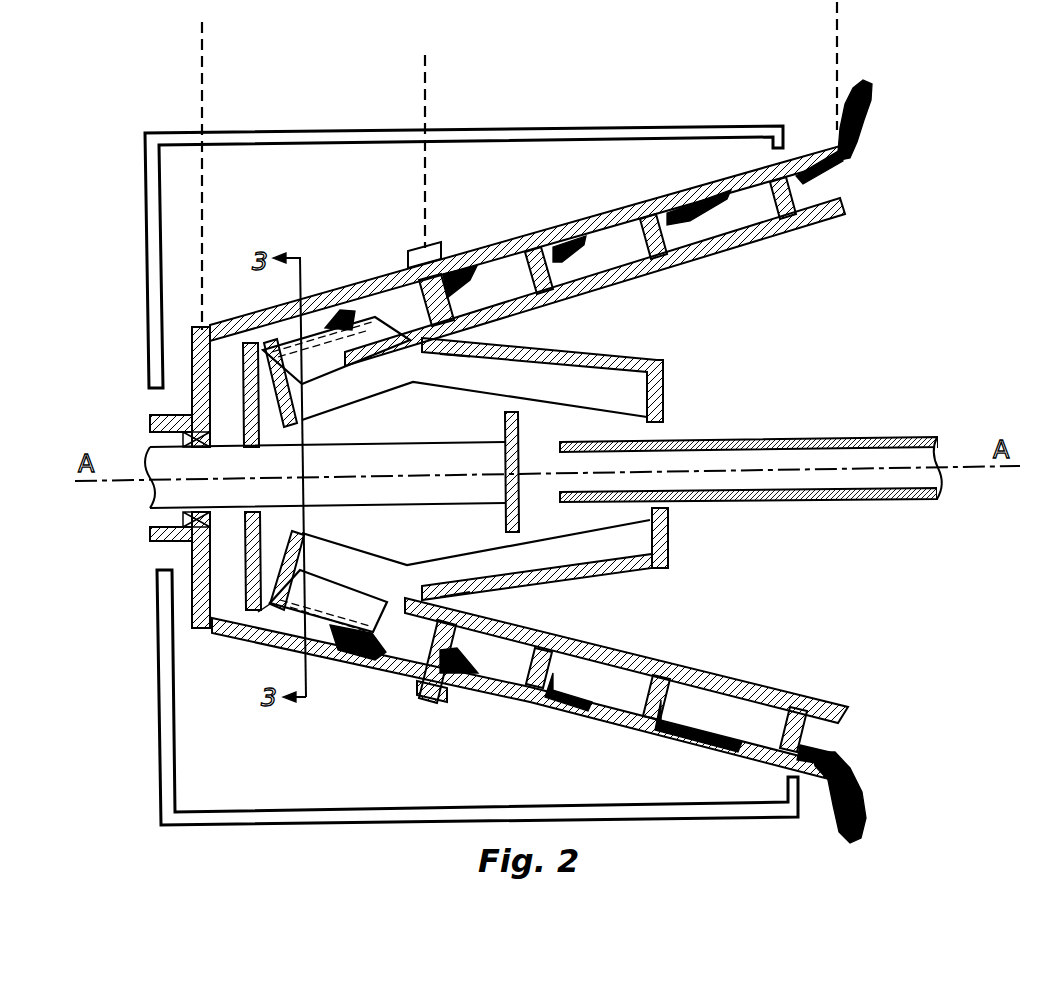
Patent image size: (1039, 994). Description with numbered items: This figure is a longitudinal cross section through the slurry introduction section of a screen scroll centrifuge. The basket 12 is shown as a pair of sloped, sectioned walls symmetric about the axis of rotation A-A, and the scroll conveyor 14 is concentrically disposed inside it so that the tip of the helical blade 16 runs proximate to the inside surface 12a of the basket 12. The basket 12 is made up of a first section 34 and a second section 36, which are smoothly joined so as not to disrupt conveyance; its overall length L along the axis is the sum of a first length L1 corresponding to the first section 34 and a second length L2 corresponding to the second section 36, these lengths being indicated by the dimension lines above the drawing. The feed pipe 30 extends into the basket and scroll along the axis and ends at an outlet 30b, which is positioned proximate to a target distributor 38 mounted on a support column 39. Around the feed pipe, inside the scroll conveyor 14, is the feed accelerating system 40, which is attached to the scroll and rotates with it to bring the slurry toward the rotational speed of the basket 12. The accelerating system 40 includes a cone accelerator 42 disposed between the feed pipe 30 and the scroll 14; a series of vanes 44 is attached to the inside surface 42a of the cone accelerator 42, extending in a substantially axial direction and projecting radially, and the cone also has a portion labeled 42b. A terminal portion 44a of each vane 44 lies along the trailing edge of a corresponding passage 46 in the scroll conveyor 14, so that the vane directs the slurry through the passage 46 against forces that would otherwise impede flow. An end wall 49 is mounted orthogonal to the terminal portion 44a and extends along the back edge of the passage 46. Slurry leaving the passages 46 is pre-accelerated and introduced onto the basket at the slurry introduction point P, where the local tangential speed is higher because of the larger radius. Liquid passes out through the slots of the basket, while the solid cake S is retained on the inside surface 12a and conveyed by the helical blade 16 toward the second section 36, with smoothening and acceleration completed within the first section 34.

The basket 12 is at (503, 230).
The inside surface 12a is at (738, 184).
The scroll conveyor 14 is at (826, 205).
The helical blade 16 is at (668, 236).
The feed pipe 30 is at (899, 428).
The outlet 30b is at (557, 478).
The first section 34 is at (285, 310).
The second section 36 is at (600, 207).
The target distributor 38 is at (519, 436).
The support column 39 is at (313, 508).
The feed accelerating system 40 is at (505, 467).
The cone accelerator 42 is at (648, 349).
The inside surface 42a is at (462, 356).
The deflector plate leg 42b is at (670, 538).
The vanes 44 is at (474, 399).
The terminal portion 44a is at (357, 402).
The passages 46 is at (357, 358).
The end wall 49 is at (228, 625).
The cake S is at (466, 280).
The slurry introduction point P is at (263, 633).
The overall length L is at (823, 28).
The first length L1 is at (411, 81).
The second length L2 is at (823, 77).